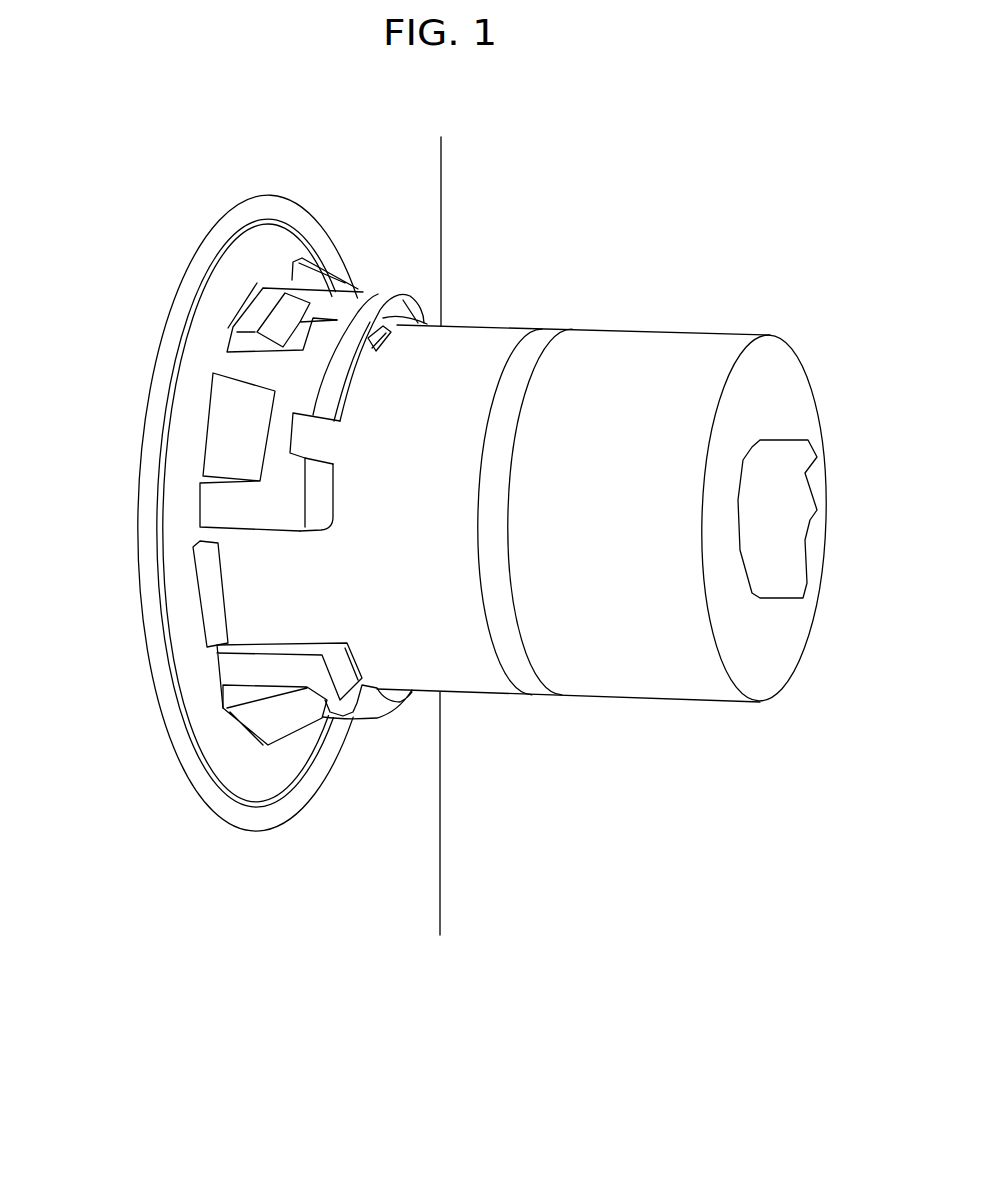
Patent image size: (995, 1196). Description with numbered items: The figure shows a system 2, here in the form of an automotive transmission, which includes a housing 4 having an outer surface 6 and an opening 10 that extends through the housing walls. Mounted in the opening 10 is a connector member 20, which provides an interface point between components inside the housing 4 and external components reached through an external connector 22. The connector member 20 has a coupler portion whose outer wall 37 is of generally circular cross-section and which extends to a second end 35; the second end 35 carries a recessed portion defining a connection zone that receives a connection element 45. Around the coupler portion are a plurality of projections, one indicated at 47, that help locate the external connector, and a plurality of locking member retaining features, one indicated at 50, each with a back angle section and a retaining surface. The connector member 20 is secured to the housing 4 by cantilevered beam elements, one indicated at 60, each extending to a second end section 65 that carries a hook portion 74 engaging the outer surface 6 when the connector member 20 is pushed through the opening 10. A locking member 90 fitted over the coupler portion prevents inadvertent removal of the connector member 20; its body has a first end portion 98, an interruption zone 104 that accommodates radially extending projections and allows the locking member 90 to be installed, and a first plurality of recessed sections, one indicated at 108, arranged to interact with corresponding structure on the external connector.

The system 2 is at (498, 165).
The housing 4 is at (405, 163).
The outer surface 6 is at (420, 240).
The opening 10 is at (200, 557).
The connector member 20 is at (612, 727).
The external connector 22 is at (667, 298).
The second end 35 is at (500, 692).
The outer wall 37 is at (390, 605).
The connection element 45 is at (525, 692).
The projection 47 is at (207, 602).
The locking member retaining feature 50 is at (383, 318).
The cantilevered beam element 60 is at (249, 489).
The second end section 65 is at (268, 460).
The hook portion 74 is at (200, 485).
The locking member 90 is at (222, 358).
The first end portion 98 is at (350, 388).
The interruption zone 104 is at (230, 628).
The recessed section 108 is at (308, 437).